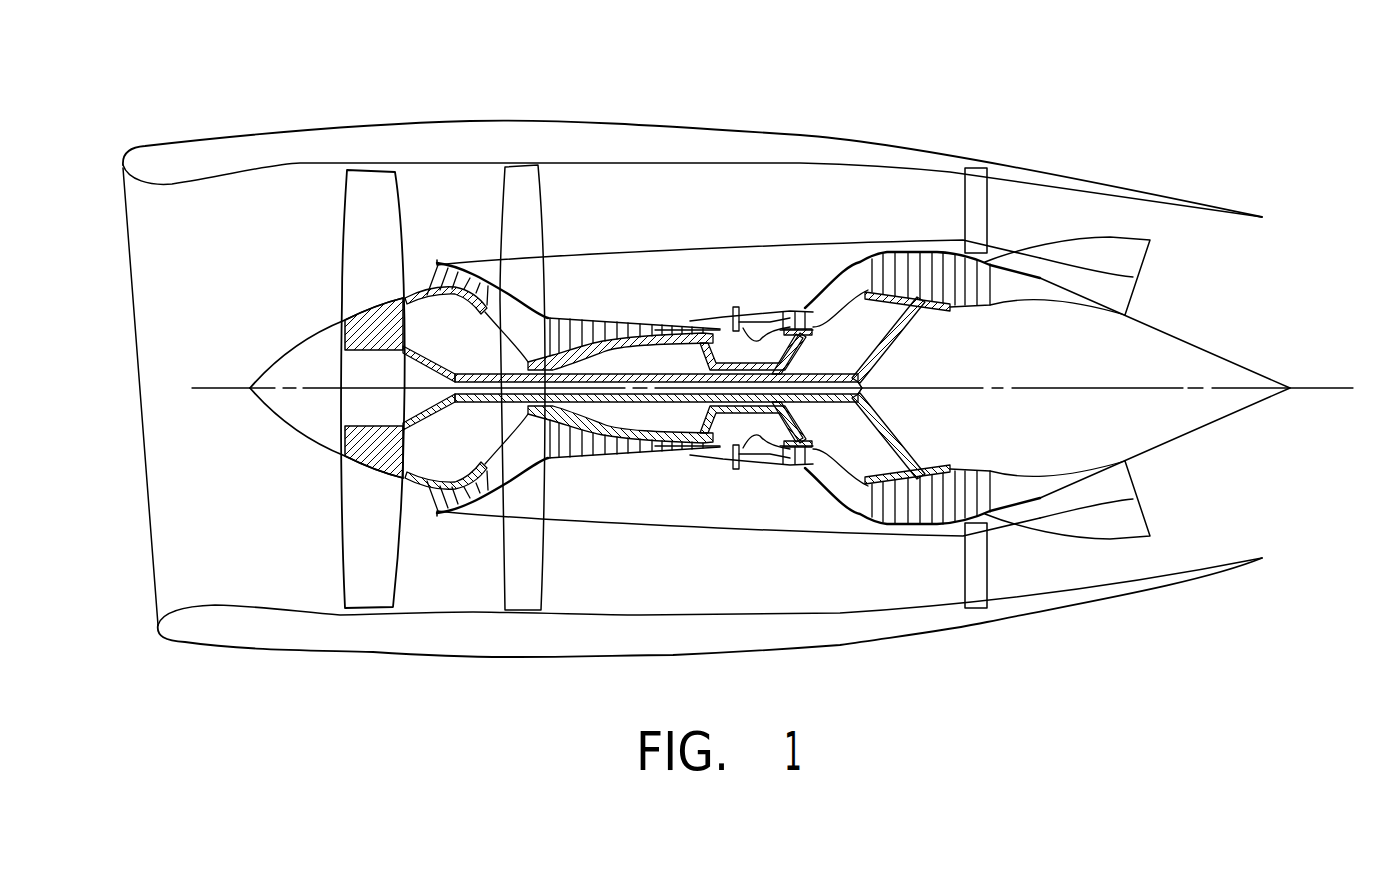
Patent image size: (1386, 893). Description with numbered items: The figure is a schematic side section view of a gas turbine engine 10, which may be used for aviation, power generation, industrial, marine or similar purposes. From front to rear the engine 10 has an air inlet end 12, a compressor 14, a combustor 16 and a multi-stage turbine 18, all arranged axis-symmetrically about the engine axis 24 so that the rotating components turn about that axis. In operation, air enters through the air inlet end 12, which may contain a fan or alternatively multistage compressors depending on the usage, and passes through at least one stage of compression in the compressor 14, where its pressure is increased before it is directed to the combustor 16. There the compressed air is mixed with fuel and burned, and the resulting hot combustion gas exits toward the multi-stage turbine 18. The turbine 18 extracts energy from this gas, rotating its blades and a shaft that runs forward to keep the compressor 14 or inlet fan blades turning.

The gas turbine engine 10 is at (717, 344).
The air inlet end 12 is at (123, 254).
The compressor 14 is at (588, 314).
The combustor 16 is at (758, 309).
The multi-stage turbine 18 is at (808, 296).
The engine axis 24 is at (1353, 388).